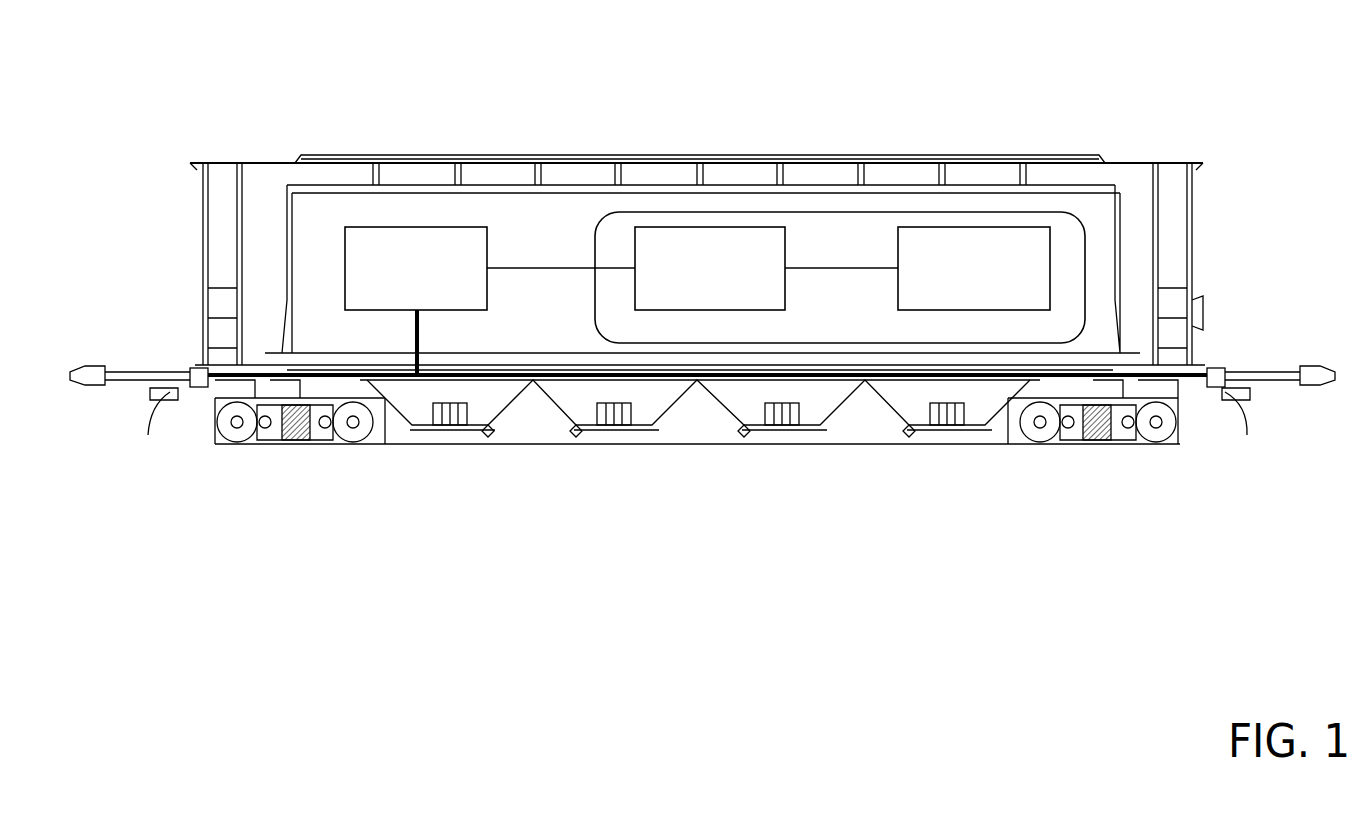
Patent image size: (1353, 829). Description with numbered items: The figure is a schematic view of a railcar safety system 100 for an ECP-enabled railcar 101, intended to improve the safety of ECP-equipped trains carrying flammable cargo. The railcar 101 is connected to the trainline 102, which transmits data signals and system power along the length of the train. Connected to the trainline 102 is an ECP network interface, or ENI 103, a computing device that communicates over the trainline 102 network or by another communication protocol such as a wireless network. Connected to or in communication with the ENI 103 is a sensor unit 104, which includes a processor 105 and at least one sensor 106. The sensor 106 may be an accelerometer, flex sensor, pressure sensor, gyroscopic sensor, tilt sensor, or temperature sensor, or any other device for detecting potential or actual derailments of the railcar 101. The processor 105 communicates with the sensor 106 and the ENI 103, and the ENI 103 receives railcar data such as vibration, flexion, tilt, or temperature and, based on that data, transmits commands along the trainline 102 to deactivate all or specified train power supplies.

The railcar safety system 100 is at (726, 547).
The ECP-enabled railcar 101 is at (260, 152).
The trainline 102 is at (157, 360).
The ECP network interface (ENI) 103 is at (436, 226).
The sensor unit 104 is at (826, 197).
The processor 105 is at (692, 226).
The sensor 106 is at (951, 226).